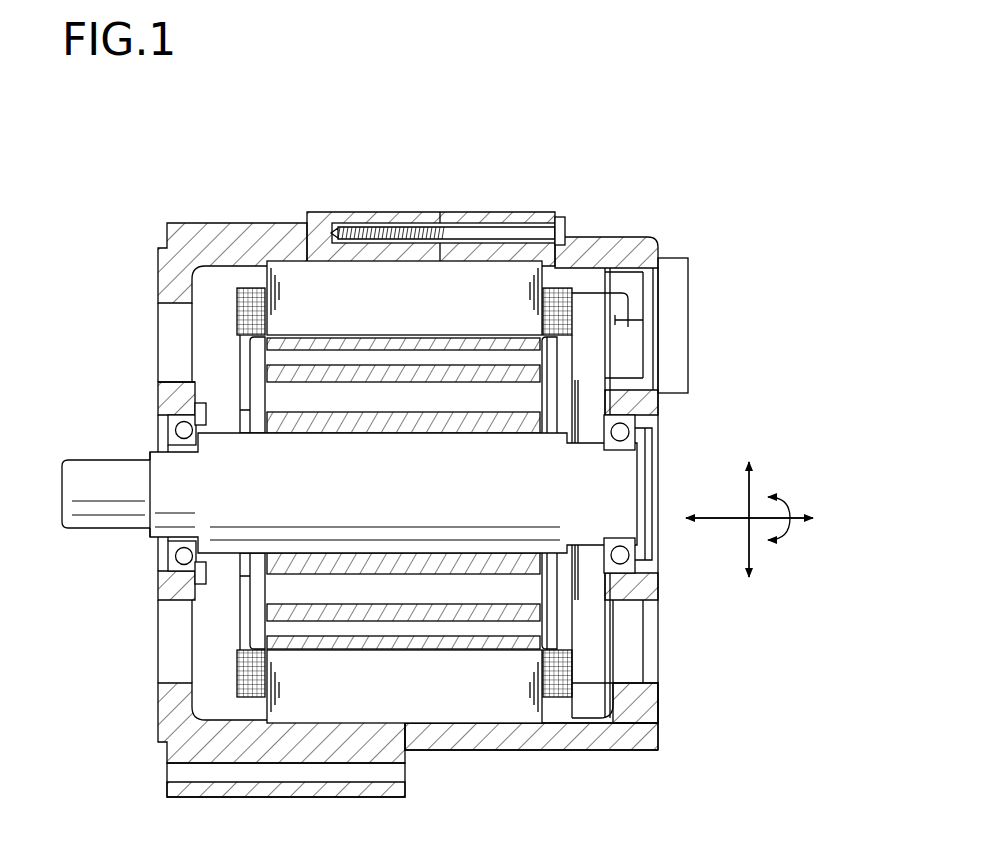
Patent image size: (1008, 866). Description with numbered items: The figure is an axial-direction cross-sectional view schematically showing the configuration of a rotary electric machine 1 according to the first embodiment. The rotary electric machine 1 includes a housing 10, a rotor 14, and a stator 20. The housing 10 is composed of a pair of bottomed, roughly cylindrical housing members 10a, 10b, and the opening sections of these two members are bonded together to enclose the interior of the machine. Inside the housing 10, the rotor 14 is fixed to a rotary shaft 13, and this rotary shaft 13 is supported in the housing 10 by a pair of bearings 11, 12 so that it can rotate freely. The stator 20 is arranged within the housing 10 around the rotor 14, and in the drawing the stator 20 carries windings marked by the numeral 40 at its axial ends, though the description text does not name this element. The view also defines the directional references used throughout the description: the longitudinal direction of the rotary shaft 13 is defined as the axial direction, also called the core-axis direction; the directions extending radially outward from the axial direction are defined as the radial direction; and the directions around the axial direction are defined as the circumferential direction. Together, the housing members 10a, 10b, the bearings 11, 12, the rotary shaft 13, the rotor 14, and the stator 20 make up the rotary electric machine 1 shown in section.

The rotary electric machine 1 is at (742, 152).
The housing 10 is at (463, 93).
The housing member 10a is at (330, 211).
The housing member 10b is at (420, 216).
The bearing 11 is at (178, 422).
The bearing 12 is at (626, 424).
The rotary shaft 13 is at (108, 512).
The rotor 14 is at (527, 372).
The stator 20 is at (515, 296).
The coil 40 is at (251, 290).